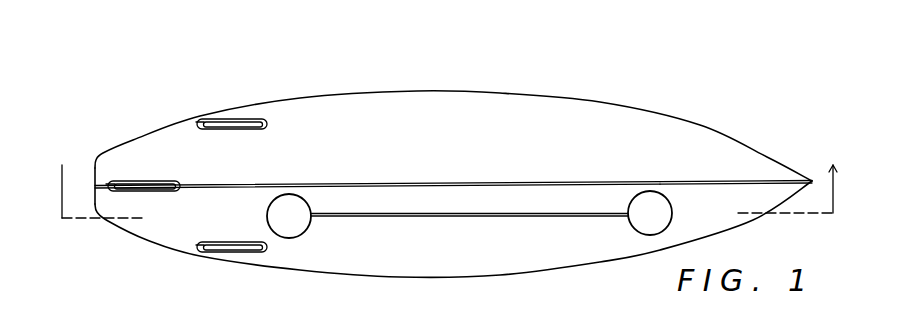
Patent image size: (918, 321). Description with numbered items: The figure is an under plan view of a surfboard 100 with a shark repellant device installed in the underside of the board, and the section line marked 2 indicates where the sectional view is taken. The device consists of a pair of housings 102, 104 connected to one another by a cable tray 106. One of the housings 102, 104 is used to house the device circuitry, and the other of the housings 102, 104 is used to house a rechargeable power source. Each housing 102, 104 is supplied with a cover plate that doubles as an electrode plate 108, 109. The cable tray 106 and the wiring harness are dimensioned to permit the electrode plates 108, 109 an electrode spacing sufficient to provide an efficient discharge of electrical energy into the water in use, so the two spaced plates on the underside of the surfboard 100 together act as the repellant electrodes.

The surfboard 100 is at (441, 88).
The housing 102 is at (297, 188).
The housing 104 is at (670, 178).
The cable tray 106 is at (480, 214).
The electrode plate 108 is at (303, 208).
The electrode plate 109 is at (650, 197).
The section line 2- 2 is at (443, 188).